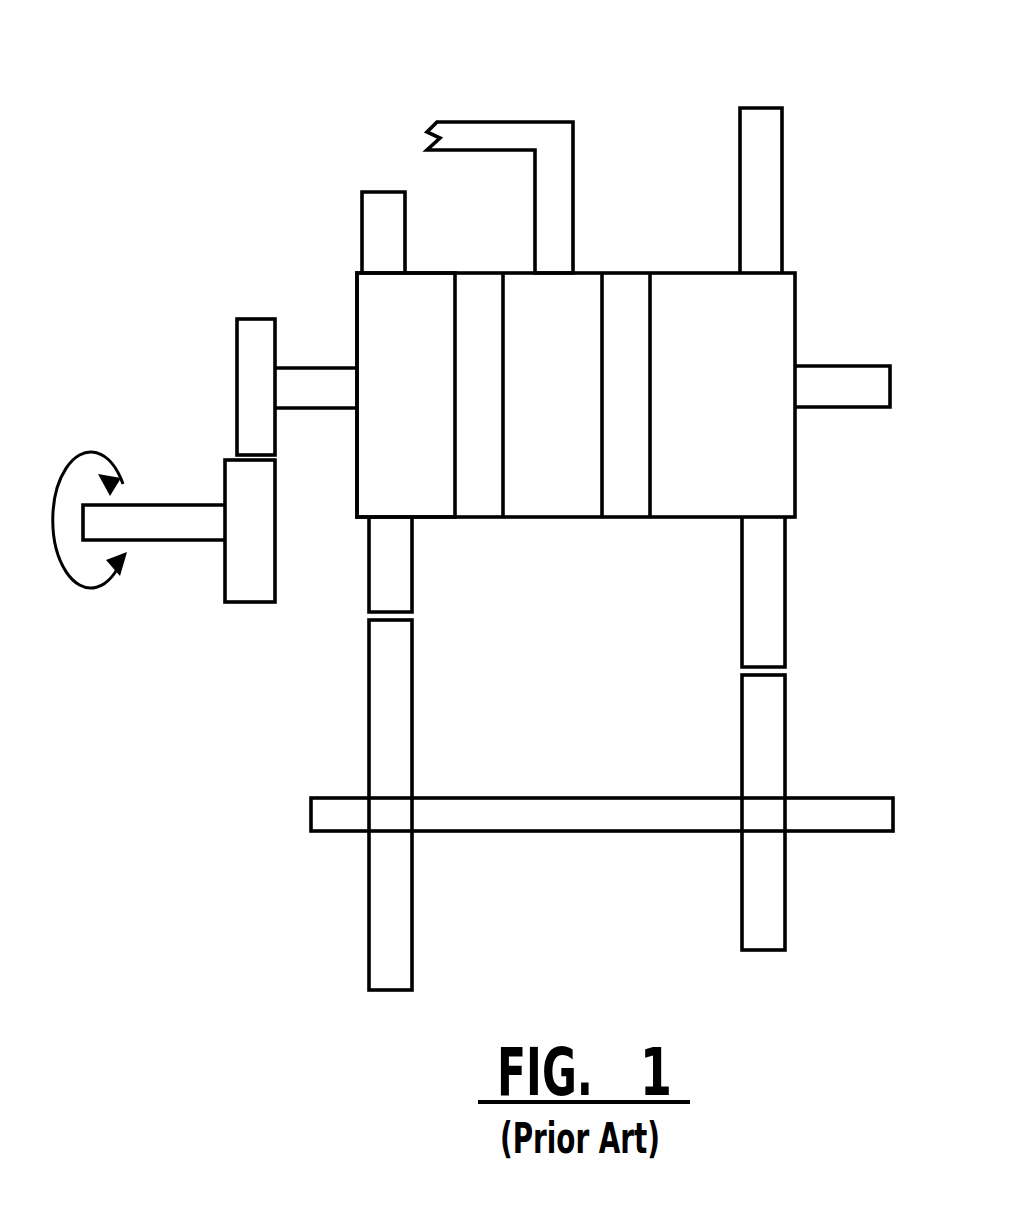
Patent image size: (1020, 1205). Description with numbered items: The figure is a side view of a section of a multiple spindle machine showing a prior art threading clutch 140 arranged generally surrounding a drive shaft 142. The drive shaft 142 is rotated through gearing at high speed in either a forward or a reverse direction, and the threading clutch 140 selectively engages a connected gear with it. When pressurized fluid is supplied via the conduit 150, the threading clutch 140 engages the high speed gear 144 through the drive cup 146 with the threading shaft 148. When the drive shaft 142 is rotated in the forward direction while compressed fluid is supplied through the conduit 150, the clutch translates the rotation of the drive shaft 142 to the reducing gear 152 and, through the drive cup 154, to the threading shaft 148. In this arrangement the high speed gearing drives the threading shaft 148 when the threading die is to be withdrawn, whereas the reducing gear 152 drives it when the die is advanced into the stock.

The threading clutch 140 is at (641, 160).
The drive shaft 142 is at (265, 365).
The high speed gear 144 is at (764, 128).
The drive cup 146 is at (783, 322).
The threading shaft 148 is at (843, 808).
The conduit 150 is at (482, 122).
The reducing gear 152 is at (375, 191).
The drive cup 154 is at (422, 487).